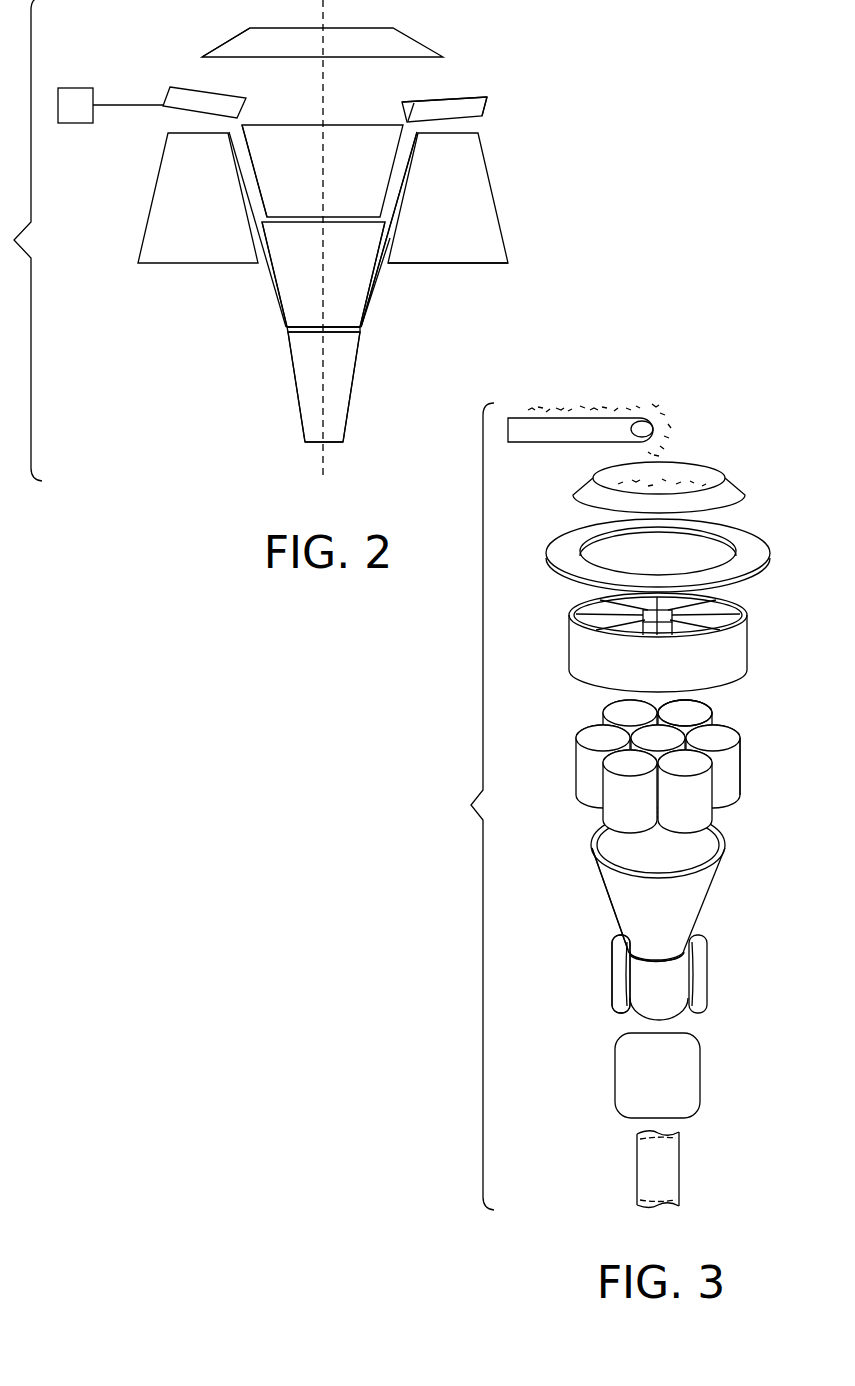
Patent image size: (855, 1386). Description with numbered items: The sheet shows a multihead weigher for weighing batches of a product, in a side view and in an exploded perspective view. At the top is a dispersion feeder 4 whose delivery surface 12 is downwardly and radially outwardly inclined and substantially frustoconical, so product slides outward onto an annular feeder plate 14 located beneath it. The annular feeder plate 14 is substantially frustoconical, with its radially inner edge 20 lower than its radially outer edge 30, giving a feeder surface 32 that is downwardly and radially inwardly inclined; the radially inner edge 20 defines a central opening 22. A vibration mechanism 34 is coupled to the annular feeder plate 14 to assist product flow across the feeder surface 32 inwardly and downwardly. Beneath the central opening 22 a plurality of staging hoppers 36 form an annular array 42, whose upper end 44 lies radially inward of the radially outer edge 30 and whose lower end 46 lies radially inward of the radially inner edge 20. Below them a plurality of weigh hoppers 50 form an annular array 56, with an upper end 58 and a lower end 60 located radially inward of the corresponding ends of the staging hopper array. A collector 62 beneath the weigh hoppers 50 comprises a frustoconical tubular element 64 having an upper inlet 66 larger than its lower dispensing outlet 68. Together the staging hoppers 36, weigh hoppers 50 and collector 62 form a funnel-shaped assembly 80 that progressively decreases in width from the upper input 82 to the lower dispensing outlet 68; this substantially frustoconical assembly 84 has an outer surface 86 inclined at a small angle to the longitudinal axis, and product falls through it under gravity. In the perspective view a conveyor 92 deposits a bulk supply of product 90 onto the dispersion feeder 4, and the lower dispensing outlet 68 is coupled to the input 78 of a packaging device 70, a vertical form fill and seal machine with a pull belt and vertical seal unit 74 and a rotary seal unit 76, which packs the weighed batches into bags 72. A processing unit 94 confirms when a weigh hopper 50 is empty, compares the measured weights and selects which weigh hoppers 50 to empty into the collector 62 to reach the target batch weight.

In FIG. 2, the dispersion feeder 4 is at (417, 42).
In FIG. 3, the dispersion feeder 4 is at (586, 496).
In FIG. 2, the delivery surface 12 is at (229, 41).
In FIG. 2, the annular feeder plate 14 is at (488, 106).
In FIG. 3, the annular feeder plate 14 is at (555, 553).
In FIG. 2, the radially inner edge 20 is at (408, 101).
In FIG. 2, the central opening 22 is at (328, 97).
In FIG. 2, the radially outer edge 30 is at (481, 97).
In FIG. 2, the feeder surface 32 is at (210, 88).
In FIG. 2, the vibration mechanism 34 is at (75, 124).
In FIG. 2, the staging hoppers 36 is at (392, 162).
In FIG. 3, the staging hoppers 36 is at (738, 614).
In FIG. 2, the annular array of staging hoppers 42 is at (420, 135).
In FIG. 3, the annular array of staging hoppers 42 is at (567, 642).
In FIG. 2, the upper end of the annular array of staging hoppers 44 is at (248, 124).
In FIG. 2, the lower end of the annular array of staging hoppers 46 is at (382, 208).
In FIG. 2, the weigh hoppers 50 is at (293, 292).
In FIG. 3, the weigh hoppers 50 is at (700, 713).
In FIG. 2, the annular array of weigh hoppers 56 is at (375, 268).
In FIG. 2, the upper end of the annular array of weigh hoppers 58 is at (266, 218).
In FIG. 3, the upper end of the annular array of weigh hoppers 58 is at (573, 763).
In FIG. 2, the lower end of the annular array of weigh hoppers 60 is at (364, 320).
In FIG. 2, the collector 62 is at (356, 374).
In FIG. 3, the collector 62 is at (608, 897).
In FIG. 2, the tubular element 64 is at (338, 407).
In FIG. 2, the upper inlet 66 is at (291, 328).
In FIG. 2, the lower dispensing outlet 68 is at (334, 443).
In FIG. 3, the lower dispensing outlet 68 is at (694, 934).
In FIG. 3, the packaging device 70 is at (572, 1015).
In FIG. 3, the bags 72 is at (637, 1170).
In FIG. 3, the pull belt and vertical seal unit 74 is at (612, 970).
In FIG. 3, the rotary seal unit 76 is at (615, 1075).
In FIG. 3, the input of the packaging device 78 is at (678, 960).
In FIG. 2, the funnel-shaped assembly 80 is at (238, 290).
In FIG. 3, the funnel-shaped assembly 80 is at (562, 834).
In FIG. 2, the upper input 82 is at (269, 124).
In FIG. 3, the upper input 82 is at (739, 734).
In FIG. 2, the frustoconical assembly 84 is at (372, 290).
In FIG. 2, the outer surface 86 is at (360, 346).
In FIG. 3, the product 90 is at (586, 405).
In FIG. 3, the conveyor 92 is at (558, 442).
In FIG. 2, the processing unit 94 is at (160, 263).